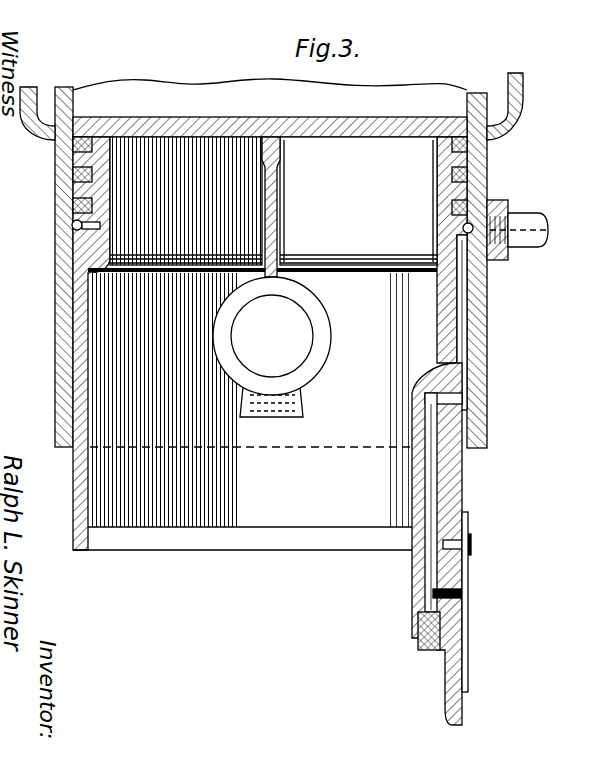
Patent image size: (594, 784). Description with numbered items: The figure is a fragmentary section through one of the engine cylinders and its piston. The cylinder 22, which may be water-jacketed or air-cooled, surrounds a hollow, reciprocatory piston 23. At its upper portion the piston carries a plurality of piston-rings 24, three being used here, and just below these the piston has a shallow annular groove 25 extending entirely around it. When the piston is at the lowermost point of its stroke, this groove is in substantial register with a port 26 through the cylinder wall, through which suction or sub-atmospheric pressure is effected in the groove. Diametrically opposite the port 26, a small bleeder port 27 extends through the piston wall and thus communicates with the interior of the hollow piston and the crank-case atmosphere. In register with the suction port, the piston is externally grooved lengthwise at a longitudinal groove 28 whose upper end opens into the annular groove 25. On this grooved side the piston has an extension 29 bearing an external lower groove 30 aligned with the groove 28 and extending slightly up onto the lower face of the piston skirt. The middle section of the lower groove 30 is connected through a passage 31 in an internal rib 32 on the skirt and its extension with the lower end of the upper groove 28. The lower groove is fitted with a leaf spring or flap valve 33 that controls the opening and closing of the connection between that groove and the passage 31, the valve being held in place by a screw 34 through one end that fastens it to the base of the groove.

The cylinder 22 is at (75, 93).
The piston 23 is at (245, 132).
The piston-rings 24 is at (462, 205).
The annular groove 25 is at (72, 228).
The port 26 is at (488, 260).
The bleeder port 27 is at (110, 226).
The longitudinal groove 28 is at (463, 365).
The extension 29 is at (448, 655).
The lower groove 30 is at (465, 630).
The passage 31 is at (430, 503).
The internal rib 32 is at (415, 468).
The flap valve 33 is at (463, 594).
The screw 34 is at (472, 543).